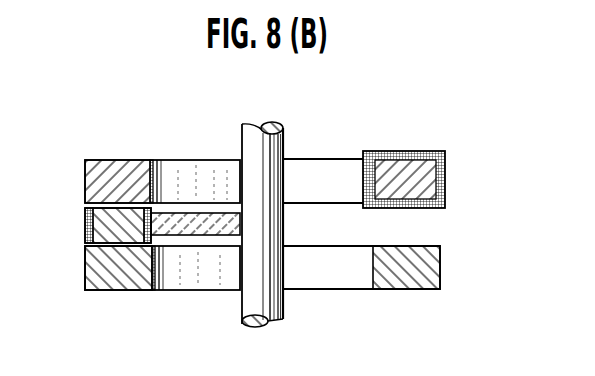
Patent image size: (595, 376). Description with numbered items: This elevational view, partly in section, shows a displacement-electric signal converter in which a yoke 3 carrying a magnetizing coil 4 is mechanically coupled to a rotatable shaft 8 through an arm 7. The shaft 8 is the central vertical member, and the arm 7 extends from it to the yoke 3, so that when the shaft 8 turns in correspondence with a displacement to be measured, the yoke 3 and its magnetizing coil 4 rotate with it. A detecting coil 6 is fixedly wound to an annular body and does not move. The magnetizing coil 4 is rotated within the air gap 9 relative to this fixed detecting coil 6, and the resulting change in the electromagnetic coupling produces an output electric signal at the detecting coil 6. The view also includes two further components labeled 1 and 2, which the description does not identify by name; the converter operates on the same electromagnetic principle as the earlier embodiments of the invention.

The upper member 1 is at (124, 160).
The lower member 2 is at (408, 289).
The yoke 3 is at (108, 232).
The magnetizing coil 4 is at (85, 229).
The detecting coil 6 is at (410, 151).
The arm 7 is at (197, 236).
The rotatable shaft 8 is at (283, 302).
The air gap 9 is at (428, 226).